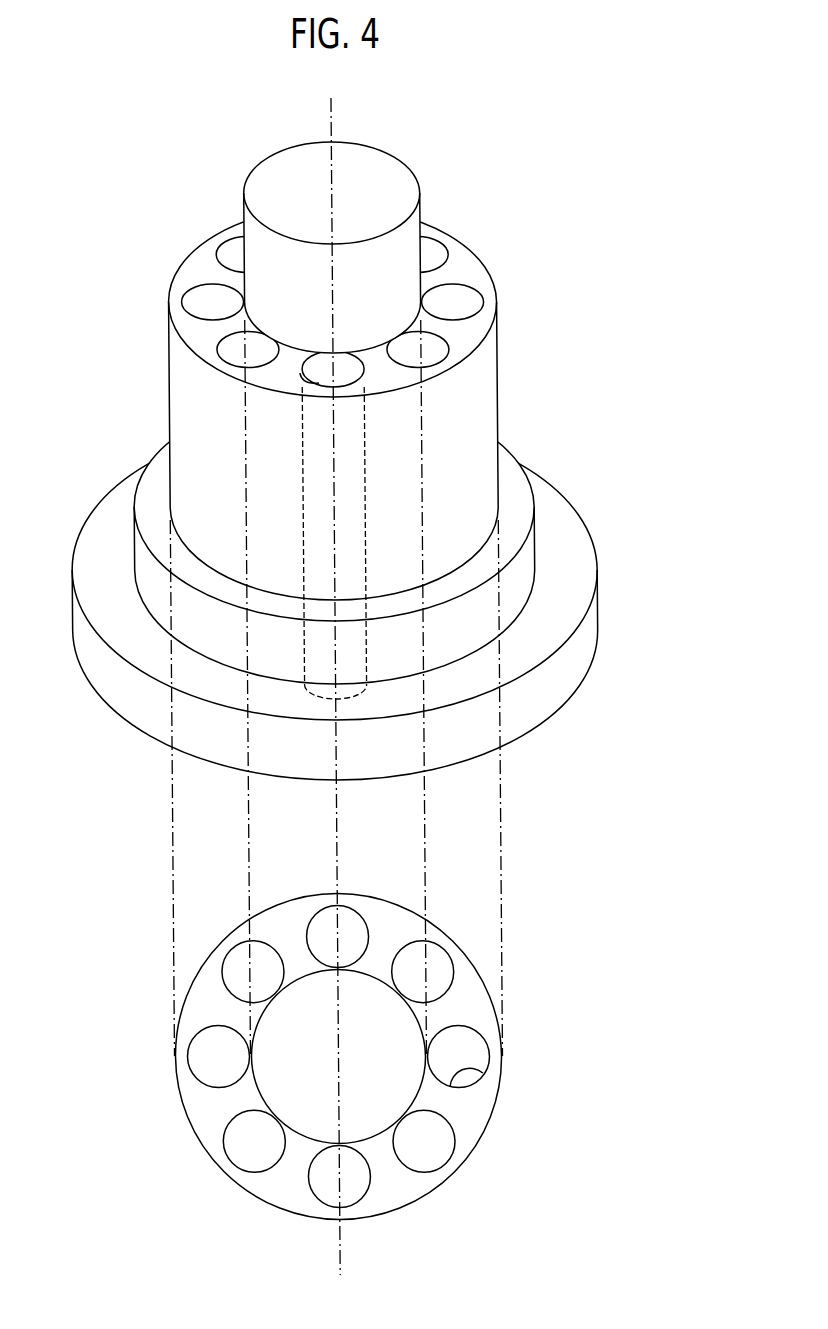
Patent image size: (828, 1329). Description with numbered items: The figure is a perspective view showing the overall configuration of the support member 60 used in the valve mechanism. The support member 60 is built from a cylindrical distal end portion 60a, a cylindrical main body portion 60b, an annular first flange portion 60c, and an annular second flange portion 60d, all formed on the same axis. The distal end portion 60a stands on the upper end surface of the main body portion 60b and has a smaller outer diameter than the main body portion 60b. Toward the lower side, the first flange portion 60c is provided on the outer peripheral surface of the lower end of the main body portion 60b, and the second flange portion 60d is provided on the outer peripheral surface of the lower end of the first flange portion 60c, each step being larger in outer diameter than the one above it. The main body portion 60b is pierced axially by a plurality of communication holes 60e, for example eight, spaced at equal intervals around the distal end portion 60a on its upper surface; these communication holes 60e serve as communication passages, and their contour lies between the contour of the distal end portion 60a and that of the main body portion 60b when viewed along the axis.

The support member 60 is at (557, 206).
The distal end portion 60a is at (411, 248).
The main body portion 60b is at (484, 388).
The first flange portion 60c is at (526, 552).
The second flange portion 60d is at (593, 625).
The communication holes 60e is at (303, 385).